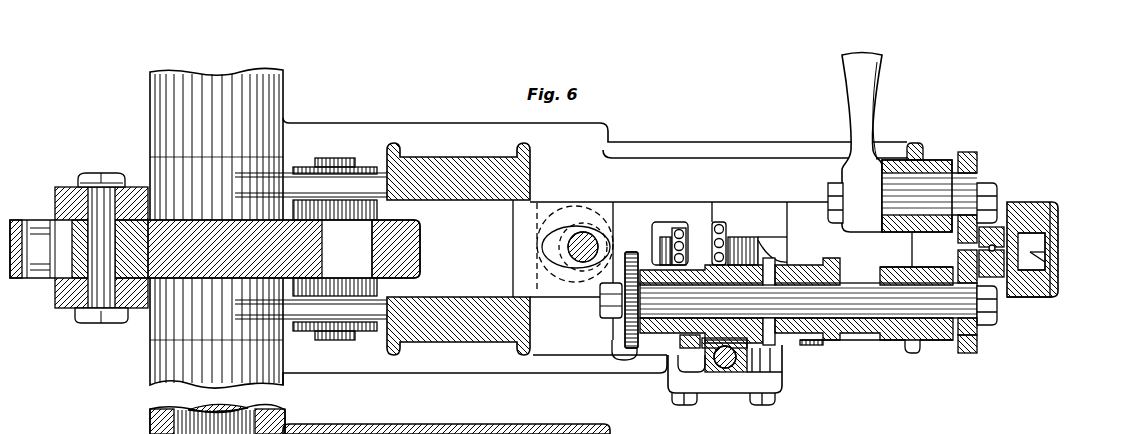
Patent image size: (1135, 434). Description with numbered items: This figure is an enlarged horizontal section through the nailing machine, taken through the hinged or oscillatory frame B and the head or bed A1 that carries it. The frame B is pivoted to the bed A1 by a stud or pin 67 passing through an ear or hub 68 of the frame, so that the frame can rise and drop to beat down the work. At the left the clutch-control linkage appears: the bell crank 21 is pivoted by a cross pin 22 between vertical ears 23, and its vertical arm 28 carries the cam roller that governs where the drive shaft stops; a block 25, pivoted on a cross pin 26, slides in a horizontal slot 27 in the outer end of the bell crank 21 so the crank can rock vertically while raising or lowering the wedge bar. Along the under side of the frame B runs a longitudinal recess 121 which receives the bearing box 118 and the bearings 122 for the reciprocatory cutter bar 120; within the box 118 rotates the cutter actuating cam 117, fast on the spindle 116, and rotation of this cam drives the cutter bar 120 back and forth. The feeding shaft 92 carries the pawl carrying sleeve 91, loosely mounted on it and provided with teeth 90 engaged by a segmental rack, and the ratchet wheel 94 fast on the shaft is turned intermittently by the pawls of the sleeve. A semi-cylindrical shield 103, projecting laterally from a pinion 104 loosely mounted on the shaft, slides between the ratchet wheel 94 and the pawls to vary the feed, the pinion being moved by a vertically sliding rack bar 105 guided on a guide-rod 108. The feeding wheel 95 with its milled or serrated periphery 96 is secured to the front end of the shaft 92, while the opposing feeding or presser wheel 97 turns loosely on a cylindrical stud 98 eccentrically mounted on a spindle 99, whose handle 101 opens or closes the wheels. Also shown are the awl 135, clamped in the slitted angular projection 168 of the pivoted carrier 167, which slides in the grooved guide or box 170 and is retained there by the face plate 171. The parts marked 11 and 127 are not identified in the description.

The stud or pin 67 is at (258, 101).
The ear or hub 68 is at (158, 326).
The cross pin 26 is at (97, 190).
The block 25 is at (75, 245).
The horizontal slot 27 is at (38, 272).
The bracket 11 is at (65, 309).
The vertical ears 23 is at (363, 355).
The bell crank 21 is at (322, 254).
The vertical arm 28 is at (415, 258).
The longitudinal recess 121 is at (786, 221).
The cross pin 22 is at (330, 338).
The cutter actuating cam 117 is at (573, 213).
The spindle 116 is at (592, 243).
The reciprocatory bar 120 is at (768, 249).
The bearing box 118 is at (578, 294).
The bearings 122 is at (916, 250).
The teeth 90 is at (850, 272).
The handle 101 is at (870, 83).
The spindle 99 is at (930, 178).
The feeding or presser wheel 97 is at (968, 158).
The cylindrical projection or stud 98 is at (982, 184).
The awl 135 is at (997, 226).
The face plate 171 is at (1053, 257).
The carrier 167 is at (1043, 266).
The grooved guide or box 170 is at (1032, 297).
The slitted angular projection 168 is at (997, 274).
The feeding wheel 95 is at (977, 338).
The milled or serrated periphery 96 is at (966, 356).
The feeding shaft 92 is at (872, 307).
The pawl carrying sleeve 91 is at (838, 341).
The ratchet wheel 94 is at (803, 346).
The semi-cylindrical shield 103 is at (757, 340).
The pinion 104 is at (748, 338).
The rack bar 105 is at (735, 373).
The guide-rod 108 is at (727, 364).
The ratchet 127 is at (715, 333).
The hinged or oscillatory frame B is at (470, 336).
The head or bed A1 is at (472, 366).